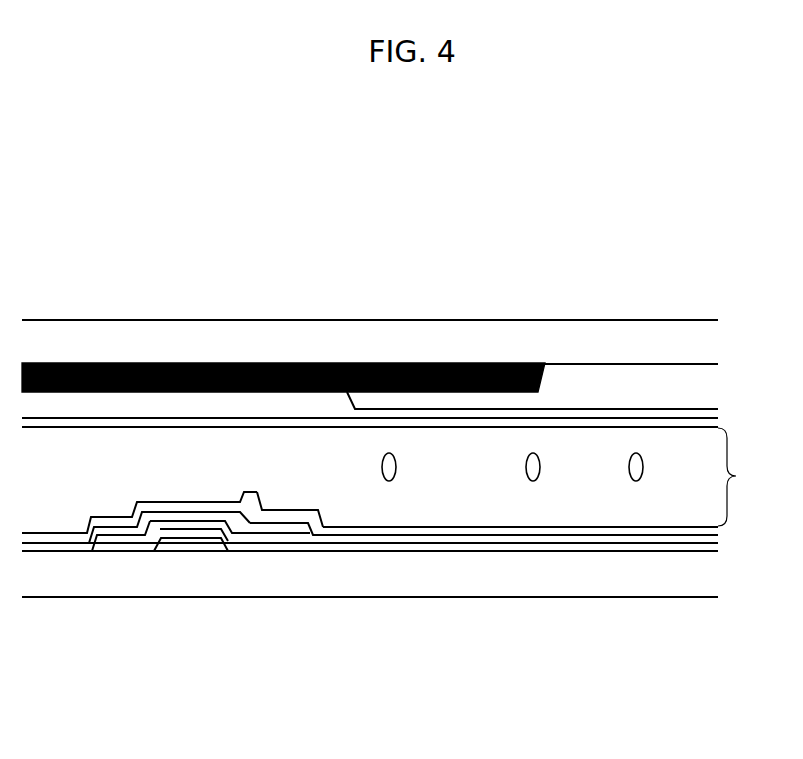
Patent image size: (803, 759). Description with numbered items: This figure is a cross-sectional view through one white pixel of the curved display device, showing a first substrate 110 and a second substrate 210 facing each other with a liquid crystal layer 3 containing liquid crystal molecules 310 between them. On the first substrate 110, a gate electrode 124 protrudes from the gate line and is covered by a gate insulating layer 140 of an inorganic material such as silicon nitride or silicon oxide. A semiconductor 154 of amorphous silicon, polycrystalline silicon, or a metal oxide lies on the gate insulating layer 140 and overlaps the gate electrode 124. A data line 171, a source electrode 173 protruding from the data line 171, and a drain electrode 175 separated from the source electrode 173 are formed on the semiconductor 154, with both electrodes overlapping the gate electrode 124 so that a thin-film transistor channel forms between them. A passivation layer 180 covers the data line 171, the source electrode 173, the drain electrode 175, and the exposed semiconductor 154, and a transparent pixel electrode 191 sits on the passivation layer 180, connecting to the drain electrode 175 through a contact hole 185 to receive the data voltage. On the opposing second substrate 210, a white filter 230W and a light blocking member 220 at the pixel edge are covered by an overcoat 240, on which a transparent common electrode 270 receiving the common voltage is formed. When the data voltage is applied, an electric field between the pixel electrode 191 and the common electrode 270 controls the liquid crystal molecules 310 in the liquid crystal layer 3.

The liquid crystal layer 3 is at (736, 477).
The first substrate 110 is at (640, 580).
The gate electrode 124 is at (192, 545).
The gate insulating layer 140 is at (553, 550).
The semiconductor 154 is at (168, 540).
The data line 171 is at (105, 535).
The source electrode 173 is at (150, 540).
The drain electrode 175 is at (248, 535).
The passivation layer 180 is at (470, 540).
The contact hole 185 is at (283, 530).
The pixel electrode 191 is at (390, 530).
The second substrate 210 is at (538, 338).
The light blocking member 220 is at (146, 362).
The white filter 230W is at (629, 390).
The overcoat 240 is at (315, 400).
The common electrode 270 is at (440, 422).
The liquid crystal molecules 310 is at (397, 467).